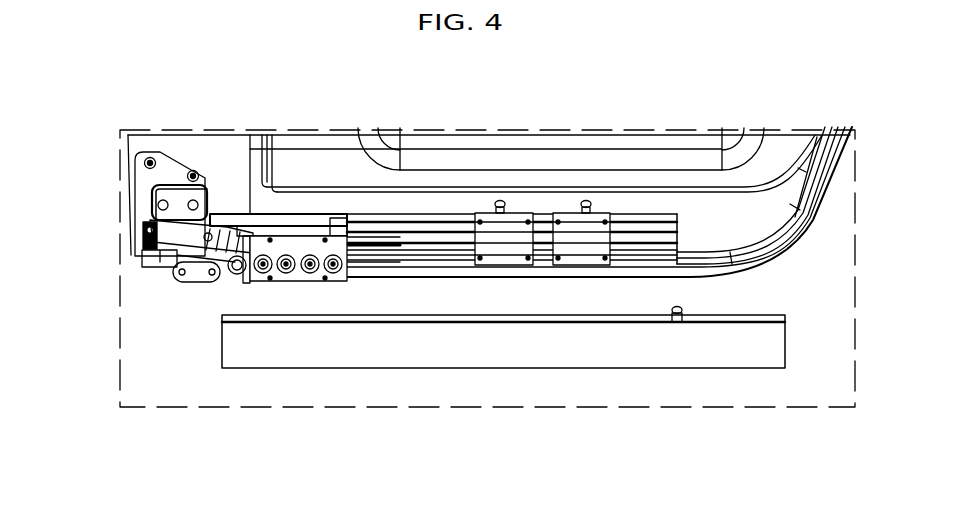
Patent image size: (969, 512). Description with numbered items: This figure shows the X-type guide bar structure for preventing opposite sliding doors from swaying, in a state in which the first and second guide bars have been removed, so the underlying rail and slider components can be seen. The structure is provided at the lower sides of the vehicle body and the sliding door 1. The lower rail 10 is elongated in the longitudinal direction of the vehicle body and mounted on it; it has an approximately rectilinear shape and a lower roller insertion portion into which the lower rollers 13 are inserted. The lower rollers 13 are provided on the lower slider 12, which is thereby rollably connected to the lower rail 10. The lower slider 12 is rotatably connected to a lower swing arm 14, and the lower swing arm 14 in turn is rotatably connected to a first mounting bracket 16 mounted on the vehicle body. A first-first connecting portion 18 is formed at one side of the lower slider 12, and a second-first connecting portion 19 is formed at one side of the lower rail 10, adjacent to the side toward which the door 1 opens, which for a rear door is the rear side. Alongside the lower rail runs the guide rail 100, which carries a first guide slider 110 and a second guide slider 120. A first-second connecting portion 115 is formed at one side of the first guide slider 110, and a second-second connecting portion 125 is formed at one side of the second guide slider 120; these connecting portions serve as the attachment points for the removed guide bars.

The sliding door 1 is at (233, 157).
The lower rail 10 is at (482, 350).
The lower slider 12 is at (322, 283).
The lower rollers 13 is at (272, 285).
The lower swing arm 14 is at (190, 232).
The first mounting bracket 16 is at (172, 168).
The first-first connecting portion 18 is at (350, 245).
The second-first connecting portion 19 is at (676, 322).
The guide rail 100 is at (272, 215).
The first guide slider 110 is at (478, 220).
The first-second connecting portion 115 is at (501, 204).
The second guide slider 120 is at (620, 217).
The second-second connecting portion 125 is at (587, 204).